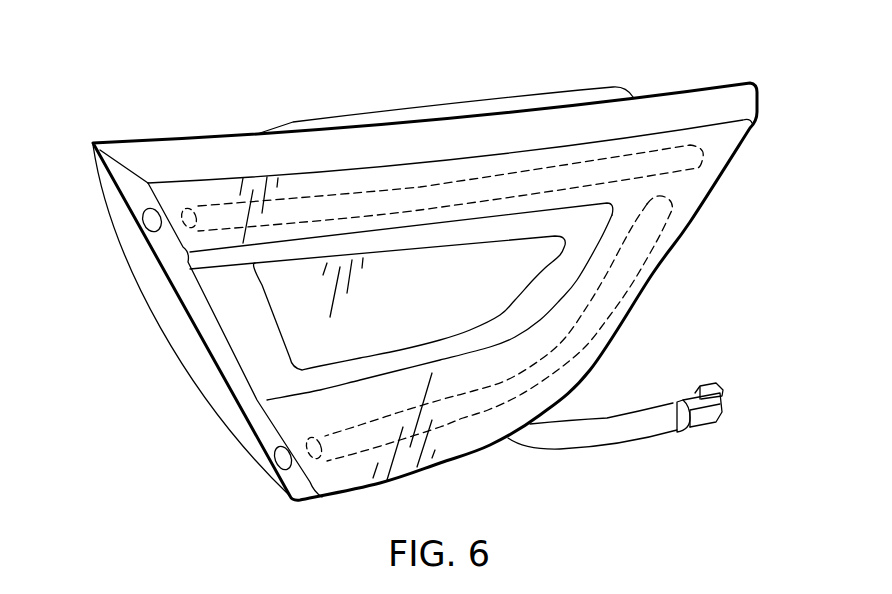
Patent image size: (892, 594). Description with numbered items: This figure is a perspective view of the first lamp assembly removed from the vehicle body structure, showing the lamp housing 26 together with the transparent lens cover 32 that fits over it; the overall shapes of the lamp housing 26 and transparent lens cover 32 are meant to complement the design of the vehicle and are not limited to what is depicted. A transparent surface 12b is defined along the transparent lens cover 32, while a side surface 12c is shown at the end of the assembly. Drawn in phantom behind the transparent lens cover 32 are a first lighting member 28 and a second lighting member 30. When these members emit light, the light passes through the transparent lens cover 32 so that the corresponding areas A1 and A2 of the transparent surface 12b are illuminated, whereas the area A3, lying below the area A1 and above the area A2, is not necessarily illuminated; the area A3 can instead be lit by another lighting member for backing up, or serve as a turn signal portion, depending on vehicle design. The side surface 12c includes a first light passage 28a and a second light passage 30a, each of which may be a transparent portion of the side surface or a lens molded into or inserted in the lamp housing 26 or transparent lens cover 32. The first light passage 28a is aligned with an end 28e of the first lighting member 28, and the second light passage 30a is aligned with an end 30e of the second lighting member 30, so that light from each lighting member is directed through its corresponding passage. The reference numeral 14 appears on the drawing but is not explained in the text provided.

The lighting assembly 14 is at (186, 95).
The lamp housing 26 is at (232, 445).
The first lighting member 28 is at (570, 164).
The first light passage 28a is at (152, 222).
The end of the first lighting member 28e is at (180, 212).
The second lighting member 30 is at (628, 274).
The second light passage 30a is at (283, 460).
The end of the second lighting member 30e is at (306, 440).
The transparent lens cover 32 is at (417, 200).
The transparent surface 12b is at (463, 425).
The side surface 12c is at (200, 308).
The area A1 is at (300, 185).
The area A2 is at (340, 473).
The area A3 is at (307, 313).